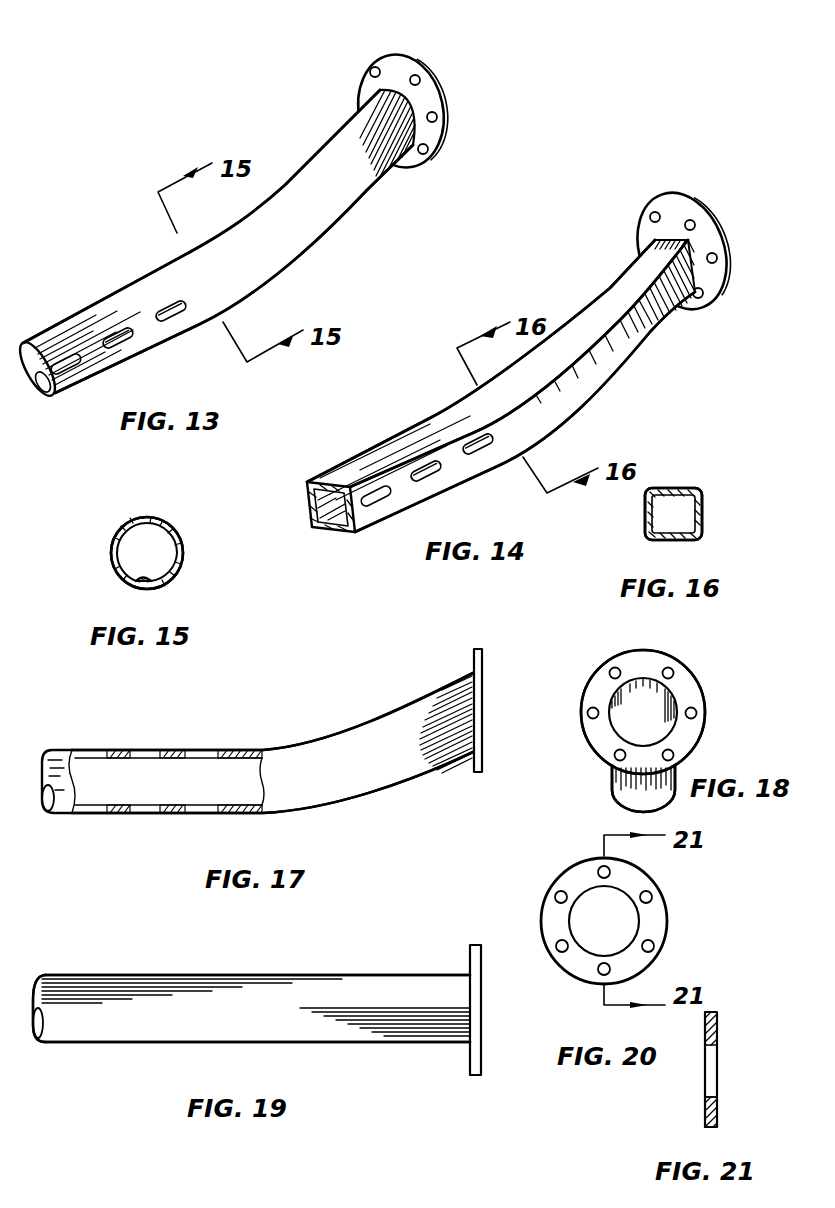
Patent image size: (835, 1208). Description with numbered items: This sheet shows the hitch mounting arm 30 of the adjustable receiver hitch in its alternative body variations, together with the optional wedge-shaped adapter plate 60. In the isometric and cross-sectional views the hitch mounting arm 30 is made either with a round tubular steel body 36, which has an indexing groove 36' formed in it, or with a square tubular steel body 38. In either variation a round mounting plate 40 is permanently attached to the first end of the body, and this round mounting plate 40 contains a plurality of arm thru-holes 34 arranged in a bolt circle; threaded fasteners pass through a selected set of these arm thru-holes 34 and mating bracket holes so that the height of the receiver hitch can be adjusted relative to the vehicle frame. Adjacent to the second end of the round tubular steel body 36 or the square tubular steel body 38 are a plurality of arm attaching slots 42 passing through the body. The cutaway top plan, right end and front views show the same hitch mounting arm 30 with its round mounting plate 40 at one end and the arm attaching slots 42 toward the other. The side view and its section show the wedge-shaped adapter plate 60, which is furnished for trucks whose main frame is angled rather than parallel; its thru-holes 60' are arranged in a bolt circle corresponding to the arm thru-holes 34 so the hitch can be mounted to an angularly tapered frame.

In FIG. 13, the hitch mounting arm 30 is at (303, 156).
In FIG. 14, the hitch mounting arm 30 is at (584, 290).
In FIG. 15, the hitch mounting arm 30 is at (98, 567).
In FIG. 16, the hitch mounting arm 30 is at (711, 513).
In FIG. 17, the hitch mounting arm 30 is at (334, 726).
In FIG. 18, the hitch mounting arm 30 is at (609, 805).
In FIG. 19, the hitch mounting arm 30 is at (388, 967).
In FIG. 13, the arm thru-holes 34 is at (425, 76).
In FIG. 14, the arm thru-holes 34 is at (692, 222).
In FIG. 18, the arm thru-holes 34 is at (611, 671).
In FIG. 13, the round tubular steel body 36 is at (214, 245).
In FIG. 15, the round tubular steel body 36 is at (172, 539).
In FIG. 17, the round tubular steel body 36 is at (245, 743).
In FIG. 18, the round tubular steel body 36 is at (599, 777).
In FIG. 19, the round tubular steel body 36 is at (251, 1064).
In FIG. 15, the indexing groove 36' is at (181, 594).
In FIG. 14, the square tubular steel body 38 is at (418, 426).
In FIG. 16, the square tubular steel body 38 is at (682, 488).
In FIG. 13, the round mounting plate 40 is at (448, 158).
In FIG. 14, the round mounting plate 40 is at (675, 192).
In FIG. 17, the round mounting plate 40 is at (477, 648).
In FIG. 18, the round mounting plate 40 is at (687, 670).
In FIG. 19, the round mounting plate 40 is at (473, 1077).
In FIG. 13, the arm attaching slots 42 is at (112, 352).
In FIG. 14, the arm attaching slots 42 is at (376, 503).
In FIG. 17, the arm attaching slots 42 is at (207, 750).
In FIG. 20, the wedge-shaped adapter plate 60 is at (643, 921).
In FIG. 21, the wedge-shaped adapter plate 60 is at (739, 1069).
In FIG. 20, the holes in flange disc 60' is at (568, 920).
In FIG. 21, the holes in flange disc 60' is at (665, 1116).